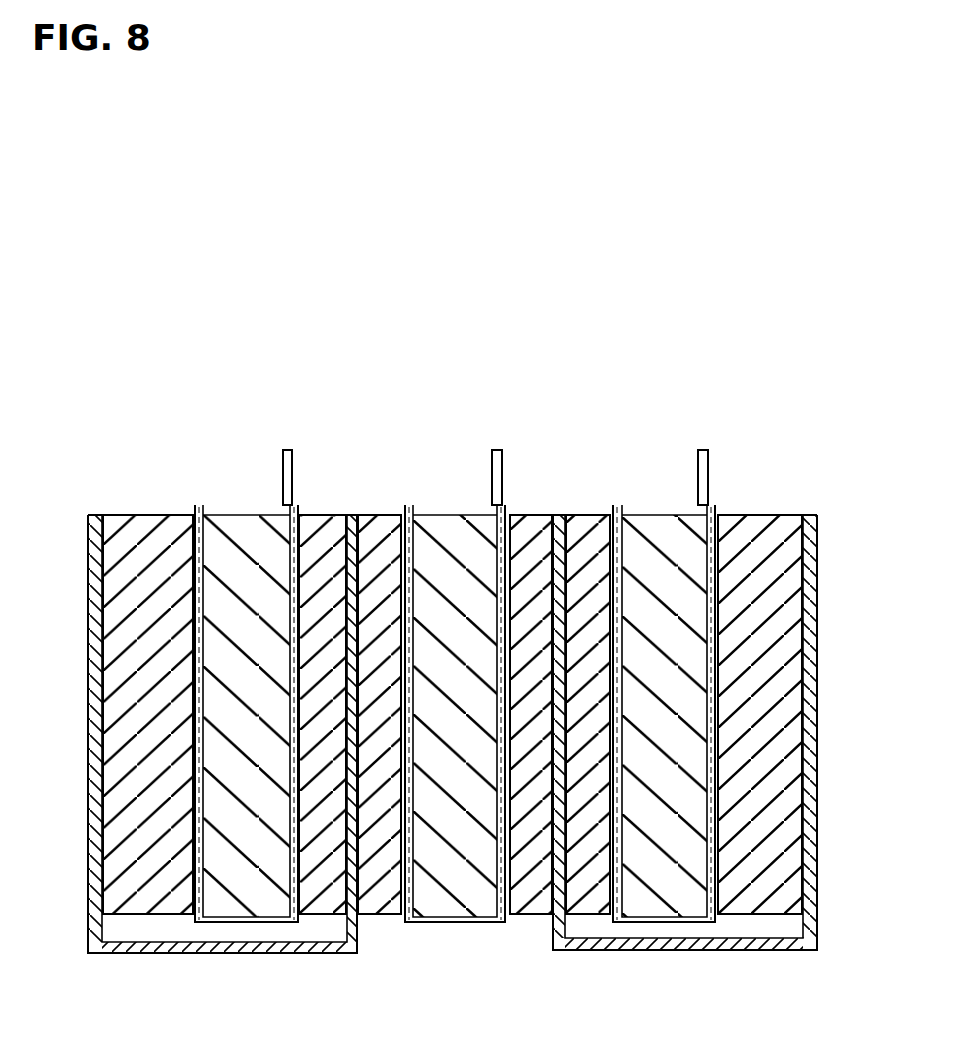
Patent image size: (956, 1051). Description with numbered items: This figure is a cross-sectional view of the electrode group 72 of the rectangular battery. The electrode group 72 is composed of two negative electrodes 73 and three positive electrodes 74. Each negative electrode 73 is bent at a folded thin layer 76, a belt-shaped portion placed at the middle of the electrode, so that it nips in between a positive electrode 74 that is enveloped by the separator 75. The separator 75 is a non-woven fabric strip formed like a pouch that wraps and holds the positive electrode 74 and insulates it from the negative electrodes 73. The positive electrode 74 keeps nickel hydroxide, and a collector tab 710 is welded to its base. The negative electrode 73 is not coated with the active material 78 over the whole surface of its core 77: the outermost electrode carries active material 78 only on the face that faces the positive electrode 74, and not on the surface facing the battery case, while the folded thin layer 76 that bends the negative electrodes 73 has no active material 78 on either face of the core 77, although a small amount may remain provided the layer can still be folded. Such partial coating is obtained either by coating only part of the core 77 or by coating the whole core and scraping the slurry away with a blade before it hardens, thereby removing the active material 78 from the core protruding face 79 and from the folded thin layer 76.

The electrode group 72 is at (823, 507).
The negative electrode 73 is at (150, 502).
The positive electrode 74 is at (232, 503).
The separator 75 is at (270, 922).
The folded thin layer 76 is at (215, 957).
The core 77 is at (92, 823).
The active material 78 is at (148, 895).
The core protruding face 79 is at (82, 722).
The collector tab 710 is at (287, 450).